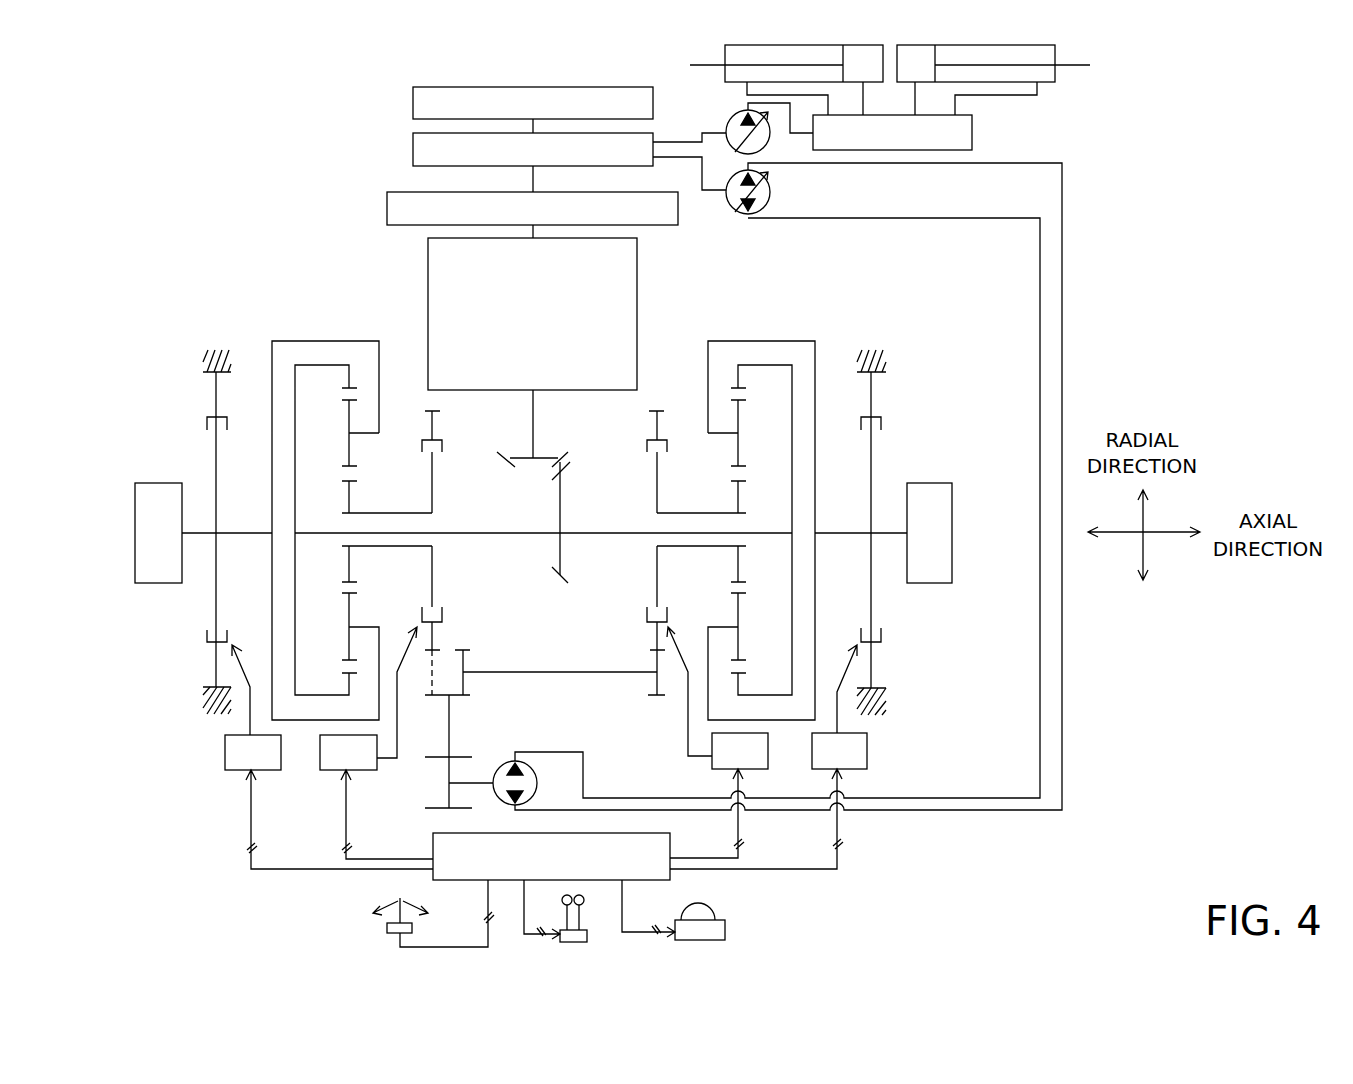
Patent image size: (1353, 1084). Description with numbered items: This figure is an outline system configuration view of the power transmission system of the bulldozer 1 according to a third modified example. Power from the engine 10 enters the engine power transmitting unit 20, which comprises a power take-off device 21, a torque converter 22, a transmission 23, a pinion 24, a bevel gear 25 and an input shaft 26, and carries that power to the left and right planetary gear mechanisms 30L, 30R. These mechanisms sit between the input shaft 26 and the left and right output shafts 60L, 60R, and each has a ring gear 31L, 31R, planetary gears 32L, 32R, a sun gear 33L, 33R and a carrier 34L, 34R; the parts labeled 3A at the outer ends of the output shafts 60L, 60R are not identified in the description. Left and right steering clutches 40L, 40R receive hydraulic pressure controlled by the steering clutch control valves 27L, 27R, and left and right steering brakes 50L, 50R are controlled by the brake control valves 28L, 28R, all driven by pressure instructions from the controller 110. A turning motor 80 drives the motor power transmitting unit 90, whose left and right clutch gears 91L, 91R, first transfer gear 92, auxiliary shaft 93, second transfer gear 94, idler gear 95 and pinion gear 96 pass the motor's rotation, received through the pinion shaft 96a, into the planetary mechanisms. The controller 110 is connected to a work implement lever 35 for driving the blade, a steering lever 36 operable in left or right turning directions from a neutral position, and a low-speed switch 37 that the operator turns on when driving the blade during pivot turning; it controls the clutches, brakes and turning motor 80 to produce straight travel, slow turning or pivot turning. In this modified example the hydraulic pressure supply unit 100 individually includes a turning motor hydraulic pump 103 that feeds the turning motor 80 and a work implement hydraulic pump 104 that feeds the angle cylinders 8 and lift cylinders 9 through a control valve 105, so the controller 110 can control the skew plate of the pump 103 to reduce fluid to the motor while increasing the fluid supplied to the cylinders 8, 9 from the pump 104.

The bulldozer 1 is at (109, 154).
The drive wheel 3A is at (160, 583).
The angle cylinders 8 is at (725, 60).
The lift cylinders 9 is at (1055, 55).
The engine 10 is at (413, 100).
The engine power transmitting unit 20 is at (279, 166).
The power take-off device 21 is at (413, 150).
The torque converter 22 is at (387, 208).
The transmission 23 is at (428, 257).
The pinion 24 is at (543, 457).
The bevel gear 25 is at (561, 548).
The input shaft 26 is at (520, 535).
The left steering clutch control valve 27L is at (376, 743).
The right steering clutch control valve 27R is at (719, 795).
The left brake control valve 28L is at (329, 757).
The right brake control valve 28R is at (768, 757).
The left planetary gear mechanism 30L is at (328, 477).
The right planetary gear mechanism 30R is at (778, 476).
The left ring gear 31L is at (351, 377).
The right ring gear 31R is at (736, 377).
The left planetary gears 32L is at (347, 416).
The right planetary gears 32R is at (742, 416).
The left sun gear 33L is at (375, 513).
The right sun gear 33R is at (712, 513).
The left carrier 34L is at (305, 341).
The right carrier 34R is at (800, 341).
The work implement lever 35 is at (565, 942).
The steering lever 36 is at (390, 936).
The low-speed switch 37 is at (725, 920).
The left steering clutch 40L is at (445, 450).
The right steering clutch 40R is at (644, 450).
The left steering brake 50L is at (207, 425).
The right steering brake 50R is at (880, 420).
The left output shaft 60L is at (244, 537).
The right output shaft 60R is at (844, 537).
The turning motor 80 is at (508, 800).
The motor power transmitting unit 90 is at (550, 682).
The left clutch gear 91L is at (450, 612).
The right clutch gear 91R is at (620, 640).
The first transfer gear 92 is at (656, 694).
The auxiliary shaft 93 is at (552, 672).
The second transfer gear 94 is at (463, 652).
The idler gear 95 is at (449, 715).
The pinion gear 96 is at (449, 773).
The pinion shaft 96a is at (480, 783).
The hydraulic pressure supply unit 100 is at (1088, 152).
The turning motor hydraulic pump 103 is at (737, 210).
The work implement hydraulic pump 104 is at (736, 118).
The control valve 105 is at (972, 128).
The controller 110 is at (551, 856).